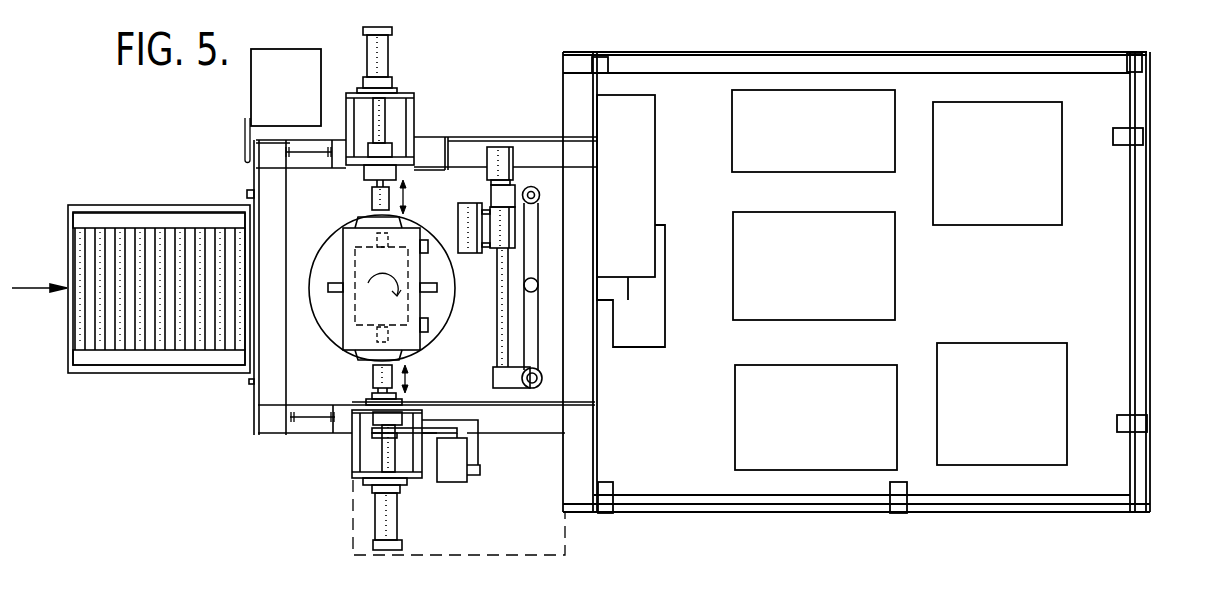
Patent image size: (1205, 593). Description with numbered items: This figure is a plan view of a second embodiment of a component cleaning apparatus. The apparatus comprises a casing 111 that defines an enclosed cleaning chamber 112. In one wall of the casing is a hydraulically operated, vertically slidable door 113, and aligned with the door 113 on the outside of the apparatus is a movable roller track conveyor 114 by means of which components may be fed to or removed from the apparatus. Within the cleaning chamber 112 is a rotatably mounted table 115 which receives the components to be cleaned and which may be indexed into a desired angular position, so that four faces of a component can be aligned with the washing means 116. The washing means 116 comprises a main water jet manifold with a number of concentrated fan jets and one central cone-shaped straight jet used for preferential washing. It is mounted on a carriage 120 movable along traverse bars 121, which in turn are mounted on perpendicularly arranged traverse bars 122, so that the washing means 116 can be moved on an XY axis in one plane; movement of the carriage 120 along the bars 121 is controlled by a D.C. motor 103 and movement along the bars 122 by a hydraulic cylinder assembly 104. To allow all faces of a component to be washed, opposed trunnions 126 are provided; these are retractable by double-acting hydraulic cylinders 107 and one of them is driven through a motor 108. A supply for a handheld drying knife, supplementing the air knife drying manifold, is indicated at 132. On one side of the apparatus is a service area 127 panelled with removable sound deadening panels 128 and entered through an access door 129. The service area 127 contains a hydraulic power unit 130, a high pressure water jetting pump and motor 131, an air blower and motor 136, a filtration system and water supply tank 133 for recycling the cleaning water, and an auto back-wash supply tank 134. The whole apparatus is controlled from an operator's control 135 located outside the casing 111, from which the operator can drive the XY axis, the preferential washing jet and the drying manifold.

The D.C. motor 103 is at (518, 148).
The hydraulic cylinder assembly 104 is at (535, 280).
The double-acting hydraulic cylinders 107 is at (391, 51).
The motor 108 is at (480, 468).
The casing 111 is at (457, 147).
The cleaning chamber 112 is at (270, 387).
The vertically slidable door 113 is at (250, 272).
The movable roller track conveyor 114 is at (122, 322).
The rotatably mounted table 115 is at (427, 337).
The washing means 116 is at (468, 207).
The carriage 120 is at (505, 223).
The traverse bars 121 is at (505, 310).
The perpendicularly arranged traverse bars 122 is at (532, 186).
The opposed trunnions 126 is at (372, 198).
The service area 127 is at (1098, 323).
The removable sound deadening panels 128 is at (1067, 505).
The access door 129 is at (1146, 177).
The hydraulic power unit 130 is at (786, 162).
The high pressure water jetting pump and motor 131 is at (789, 295).
The handhold drying knife supply 132 is at (247, 135).
The filtration system and water supply tank 133 is at (976, 208).
The auto back-wash supply tank 134 is at (984, 440).
The operator's control 135 is at (272, 117).
The air blower and motor 136 is at (798, 438).